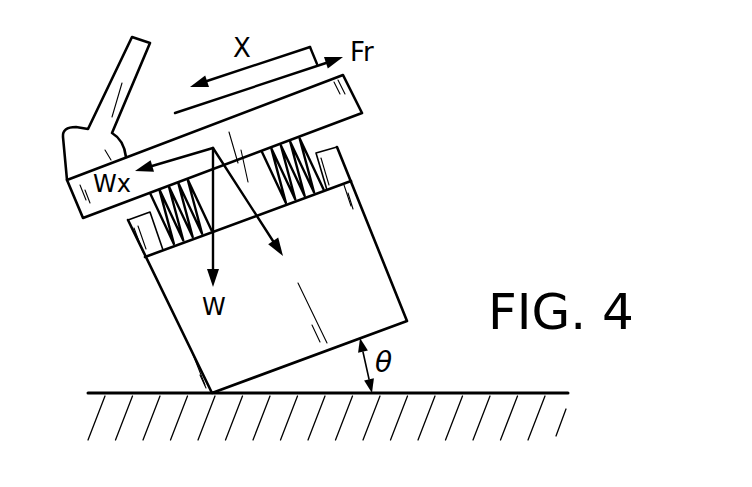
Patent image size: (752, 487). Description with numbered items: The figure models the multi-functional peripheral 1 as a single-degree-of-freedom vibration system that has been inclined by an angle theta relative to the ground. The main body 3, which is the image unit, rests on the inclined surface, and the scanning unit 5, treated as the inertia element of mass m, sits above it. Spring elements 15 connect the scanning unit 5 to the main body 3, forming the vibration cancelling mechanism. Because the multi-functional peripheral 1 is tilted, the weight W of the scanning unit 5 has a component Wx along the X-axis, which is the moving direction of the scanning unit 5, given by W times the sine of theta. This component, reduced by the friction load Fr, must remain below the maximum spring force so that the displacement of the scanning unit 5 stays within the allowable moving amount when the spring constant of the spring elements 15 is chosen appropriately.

The multi-functional peripheral 1 is at (443, 72).
The main body 3 is at (376, 284).
The scanning unit 5 is at (322, 112).
The spring elements 15 is at (184, 243).